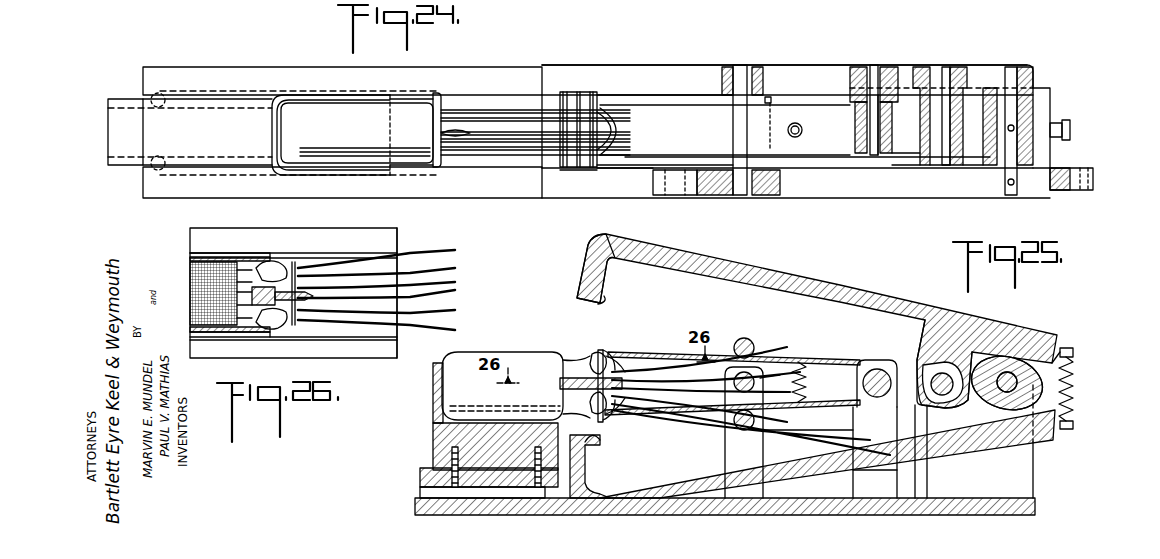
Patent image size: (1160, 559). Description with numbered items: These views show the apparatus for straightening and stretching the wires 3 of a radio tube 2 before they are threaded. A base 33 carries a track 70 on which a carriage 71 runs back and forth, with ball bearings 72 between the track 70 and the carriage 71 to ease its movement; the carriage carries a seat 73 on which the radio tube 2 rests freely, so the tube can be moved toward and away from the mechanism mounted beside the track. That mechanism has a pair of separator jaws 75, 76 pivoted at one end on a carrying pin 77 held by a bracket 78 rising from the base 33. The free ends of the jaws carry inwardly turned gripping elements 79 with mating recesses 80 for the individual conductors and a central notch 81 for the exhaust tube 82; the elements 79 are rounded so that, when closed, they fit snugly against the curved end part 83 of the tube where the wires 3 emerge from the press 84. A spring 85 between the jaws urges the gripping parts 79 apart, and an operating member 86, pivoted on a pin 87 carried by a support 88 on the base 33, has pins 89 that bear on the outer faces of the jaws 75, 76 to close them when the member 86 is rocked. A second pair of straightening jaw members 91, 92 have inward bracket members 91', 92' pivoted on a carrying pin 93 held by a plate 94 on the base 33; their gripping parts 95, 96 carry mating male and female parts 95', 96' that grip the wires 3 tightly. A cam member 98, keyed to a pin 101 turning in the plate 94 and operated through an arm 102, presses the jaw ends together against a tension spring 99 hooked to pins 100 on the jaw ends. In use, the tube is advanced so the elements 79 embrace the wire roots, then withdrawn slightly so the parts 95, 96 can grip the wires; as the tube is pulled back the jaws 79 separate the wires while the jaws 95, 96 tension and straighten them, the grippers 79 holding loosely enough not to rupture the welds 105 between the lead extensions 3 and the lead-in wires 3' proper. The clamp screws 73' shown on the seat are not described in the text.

In FIG. 24, the radio tube 2 is at (292, 126).
In FIG. 26, the radio tube 2 is at (210, 262).
In FIG. 25, the radio tube 2 is at (517, 352).
In FIG. 24, the wires 3 is at (535, 118).
In FIG. 26, the wires 3 is at (385, 290).
In FIG. 25, the wires 3 is at (751, 401).
In FIG. 26, the lead-in wires proper 3' is at (230, 286).
In FIG. 24, the base 33 is at (626, 66).
In FIG. 25, the base 33 is at (418, 509).
In FIG. 24, the track 70 is at (228, 76).
In FIG. 24, the carriage 71 is at (118, 152).
In FIG. 25, the carriage 71 is at (421, 470).
In FIG. 24, the ball bearings 72 is at (372, 89).
In FIG. 24, the seat 73 is at (331, 105).
In FIG. 26, the seat 73 is at (208, 287).
In FIG. 25, the seat 73 is at (475, 425).
In FIG. 25, the clamp screws 73' is at (496, 439).
In FIG. 24, the separator jaw 75 is at (893, 120).
In FIG. 25, the separator jaw 75 is at (718, 352).
In FIG. 24, the separator jaw 76 is at (664, 106).
In FIG. 26, the separator jaw 76 is at (343, 262).
In FIG. 25, the separator jaw 76 is at (812, 406).
In FIG. 24, the carrying pin 77 is at (876, 72).
In FIG. 25, the carrying pin 77 is at (875, 369).
In FIG. 24, the bracket 78 is at (856, 66).
In FIG. 25, the bracket 78 is at (858, 486).
In FIG. 24, the gripping and separating elements 79 is at (618, 108).
In FIG. 25, the gripping and separating elements 79 is at (610, 355).
In FIG. 25, the recesses 80 is at (612, 360).
In FIG. 24, the central notch 81 is at (604, 131).
In FIG. 25, the central notch 81 is at (596, 352).
In FIG. 26, the exhaust tube 82 is at (306, 294).
In FIG. 26, the curved end part 83 is at (280, 262).
In FIG. 25, the curved end part 83 is at (590, 354).
In FIG. 26, the press 84 is at (262, 286).
In FIG. 25, the press 84 is at (562, 383).
In FIG. 24, the spring 85 is at (795, 122).
In FIG. 25, the spring 85 is at (805, 372).
In FIG. 24, the operating member 86 is at (716, 196).
In FIG. 24, the pin 87 is at (734, 119).
In FIG. 25, the pin 87 is at (760, 350).
In FIG. 24, the support 88 is at (758, 69).
In FIG. 25, the support 88 is at (720, 458).
In FIG. 24, the pins 89 is at (771, 98).
In FIG. 25, the pins 89 is at (746, 338).
In FIG. 25, the straightening jaw member 91 is at (817, 321).
In FIG. 24, the pivotal bracket member 91' is at (962, 143).
In FIG. 25, the pivotal bracket member 91' is at (926, 364).
In FIG. 24, the straightening jaw member 92 is at (625, 194).
In FIG. 25, the straightening jaw member 92 is at (808, 451).
In FIG. 24, the pivotal bracket member 92' is at (962, 130).
In FIG. 25, the pivotal bracket member 92' is at (890, 450).
In FIG. 25, the carrying pin 93 is at (949, 375).
In FIG. 24, the plate 94 is at (950, 67).
In FIG. 25, the plate 94 is at (1022, 480).
In FIG. 25, the gripping part 95 is at (579, 268).
In FIG. 25, the male part 95' is at (614, 297).
In FIG. 24, the gripping part 96 is at (547, 157).
In FIG. 25, the gripping part 96 is at (602, 466).
In FIG. 24, the female part 96' is at (578, 195).
In FIG. 25, the female part 96' is at (606, 445).
In FIG. 24, the cam member 98 is at (1041, 96).
In FIG. 25, the cam member 98 is at (1072, 372).
In FIG. 24, the tension spring 99 is at (1063, 125).
In FIG. 25, the tension spring 99 is at (1074, 398).
In FIG. 24, the pins 100 is at (1071, 129).
In FIG. 25, the pins 100 is at (1068, 346).
In FIG. 24, the pin 101 is at (1013, 68).
In FIG. 25, the pin 101 is at (1005, 396).
In FIG. 24, the arm 102 is at (1090, 191).
In FIG. 26, the welds 105 is at (297, 270).